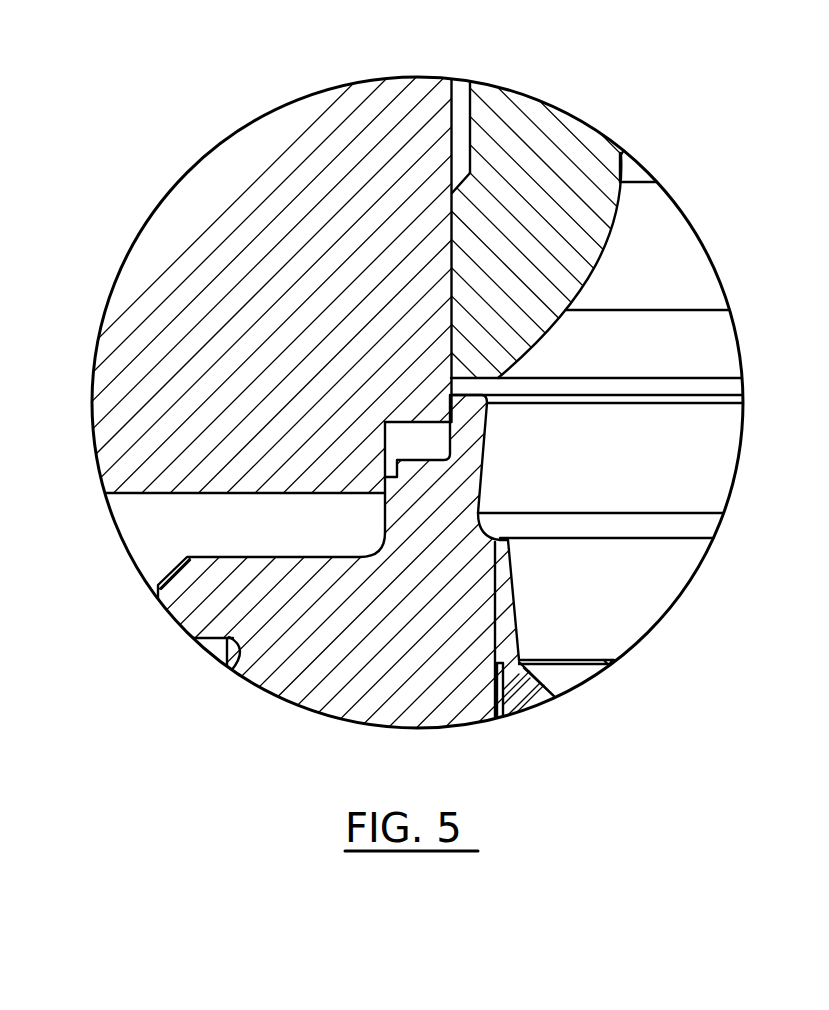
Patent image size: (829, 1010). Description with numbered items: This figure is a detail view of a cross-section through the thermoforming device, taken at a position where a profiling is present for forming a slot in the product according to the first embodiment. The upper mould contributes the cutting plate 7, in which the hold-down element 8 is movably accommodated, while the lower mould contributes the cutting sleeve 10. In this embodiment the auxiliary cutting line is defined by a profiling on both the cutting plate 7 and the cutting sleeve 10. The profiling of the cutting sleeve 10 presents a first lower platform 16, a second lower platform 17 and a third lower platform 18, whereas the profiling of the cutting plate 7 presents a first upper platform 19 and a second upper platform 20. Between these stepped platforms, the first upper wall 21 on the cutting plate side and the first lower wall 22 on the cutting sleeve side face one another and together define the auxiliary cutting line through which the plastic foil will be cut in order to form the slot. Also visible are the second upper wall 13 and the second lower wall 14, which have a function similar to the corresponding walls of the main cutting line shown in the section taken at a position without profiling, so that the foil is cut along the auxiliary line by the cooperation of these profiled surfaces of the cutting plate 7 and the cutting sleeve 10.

The cutting plate 7 is at (273, 133).
The hold-down element 8 is at (543, 132).
The cutting sleeve 10 is at (325, 682).
The second upper wall 13 is at (380, 453).
The second lower wall 14 is at (385, 513).
The first lower platform 16 is at (477, 398).
The second lower platform 17 is at (418, 462).
The third lower platform 18 is at (233, 556).
The first upper platform 19 is at (402, 422).
The second upper platform 20 is at (230, 490).
The first upper wall 21 is at (448, 383).
The first lower wall 22 is at (450, 437).